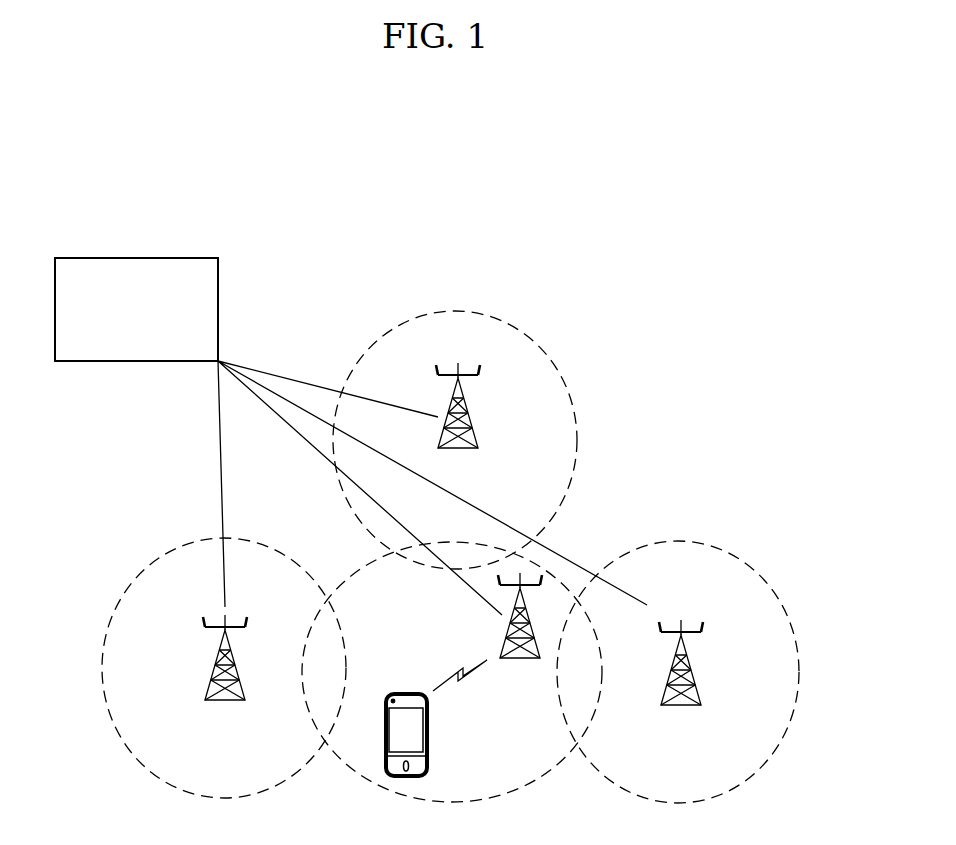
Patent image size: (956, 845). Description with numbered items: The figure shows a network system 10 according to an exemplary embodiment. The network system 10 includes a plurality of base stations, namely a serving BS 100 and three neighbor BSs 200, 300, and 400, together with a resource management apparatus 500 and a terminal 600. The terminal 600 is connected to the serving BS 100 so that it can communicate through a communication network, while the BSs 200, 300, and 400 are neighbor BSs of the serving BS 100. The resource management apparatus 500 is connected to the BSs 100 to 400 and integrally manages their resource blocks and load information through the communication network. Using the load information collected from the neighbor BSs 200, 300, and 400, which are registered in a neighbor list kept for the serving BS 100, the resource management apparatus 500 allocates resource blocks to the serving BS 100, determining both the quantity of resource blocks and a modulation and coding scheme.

The network system 10 is at (667, 273).
The serving base station 100 is at (505, 637).
The neighbor base station 200 is at (466, 412).
The neighbor base station 300 is at (211, 679).
The neighbor base station 400 is at (693, 666).
The resource management apparatus 500 is at (185, 258).
The terminal 600 is at (429, 733).